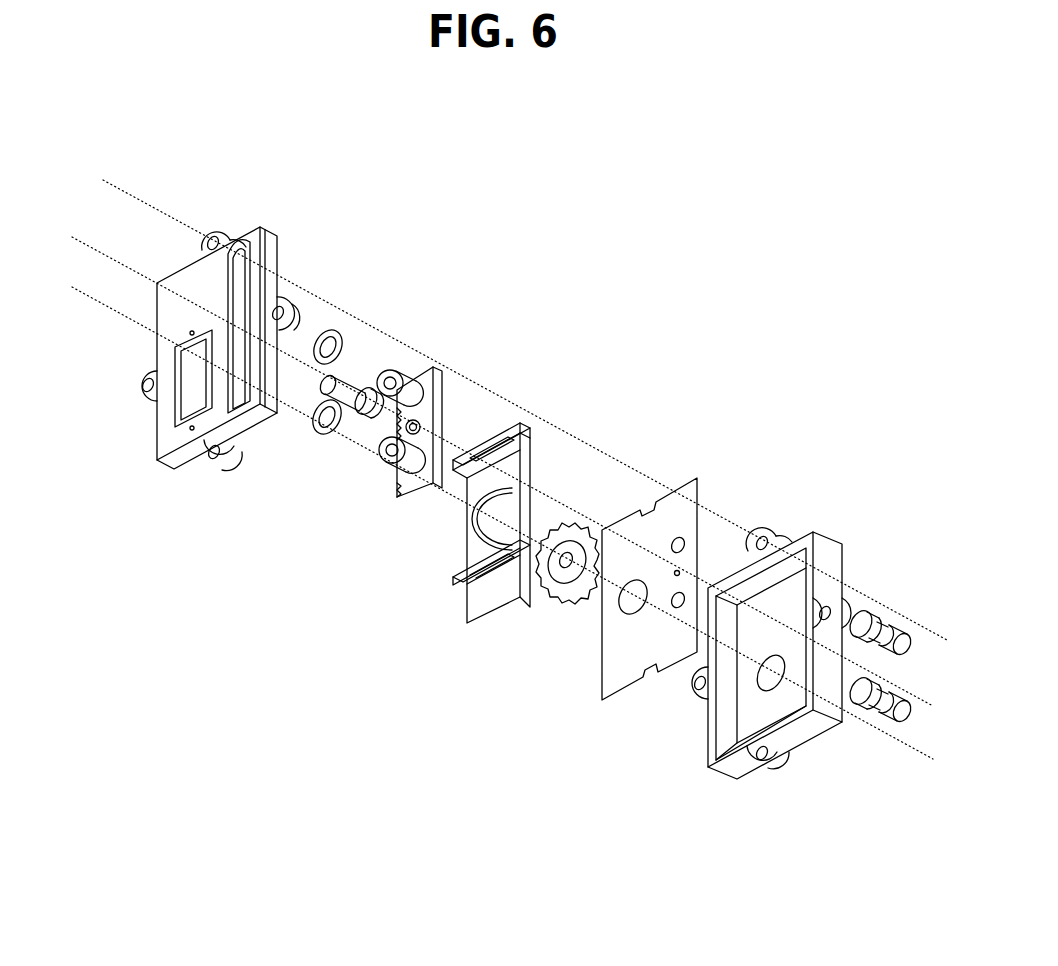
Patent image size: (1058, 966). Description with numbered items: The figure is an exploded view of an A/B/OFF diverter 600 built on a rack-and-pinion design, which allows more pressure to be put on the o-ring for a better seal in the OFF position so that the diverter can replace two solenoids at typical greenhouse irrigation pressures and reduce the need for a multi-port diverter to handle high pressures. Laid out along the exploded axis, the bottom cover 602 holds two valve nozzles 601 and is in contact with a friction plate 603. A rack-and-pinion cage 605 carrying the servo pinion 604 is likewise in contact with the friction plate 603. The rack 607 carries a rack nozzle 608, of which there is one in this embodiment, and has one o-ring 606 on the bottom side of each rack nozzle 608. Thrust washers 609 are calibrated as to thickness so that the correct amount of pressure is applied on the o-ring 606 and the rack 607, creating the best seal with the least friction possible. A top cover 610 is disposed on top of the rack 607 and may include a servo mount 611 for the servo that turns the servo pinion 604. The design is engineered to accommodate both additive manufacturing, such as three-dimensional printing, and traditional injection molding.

The A/B/OFF diverter 600 is at (648, 217).
The valve nozzles 601 is at (893, 592).
The bottom cover 602 is at (804, 427).
The friction plate 603 is at (540, 783).
The servo pinion 604 is at (587, 510).
The rack-and-pinion cage 605 is at (370, 708).
The o-ring 606 is at (437, 410).
The rack 607 is at (524, 374).
The rack nozzle 608 is at (358, 423).
The thrust washers 609 is at (345, 321).
The top cover 610 is at (201, 372).
The servo mount 611 is at (178, 425).